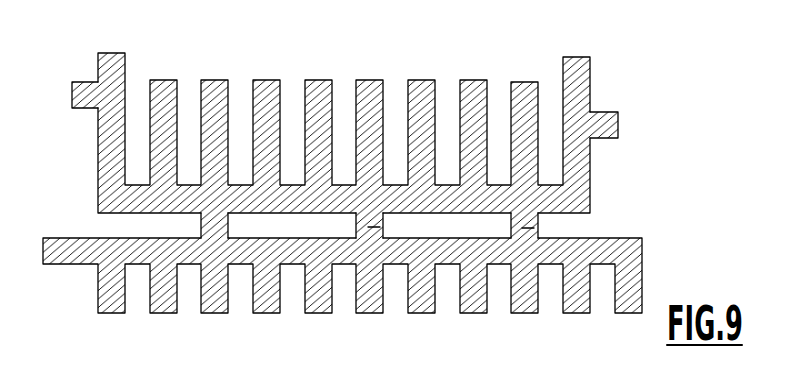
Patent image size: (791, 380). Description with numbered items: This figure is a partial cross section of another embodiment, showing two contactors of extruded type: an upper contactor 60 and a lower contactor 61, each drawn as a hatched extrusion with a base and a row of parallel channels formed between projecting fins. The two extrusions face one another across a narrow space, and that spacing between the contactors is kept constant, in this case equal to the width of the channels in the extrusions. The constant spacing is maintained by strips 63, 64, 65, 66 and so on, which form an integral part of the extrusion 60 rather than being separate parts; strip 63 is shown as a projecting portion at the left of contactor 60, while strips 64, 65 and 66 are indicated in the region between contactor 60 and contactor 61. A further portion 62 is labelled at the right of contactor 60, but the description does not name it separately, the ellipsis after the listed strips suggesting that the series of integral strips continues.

The contactor 60 is at (590, 155).
The contactor 61 is at (632, 270).
The right mounting tab 62 is at (608, 124).
The strip 63 is at (85, 104).
The strip 64 is at (212, 225).
The strip 65 is at (388, 228).
The strip 66 is at (543, 230).